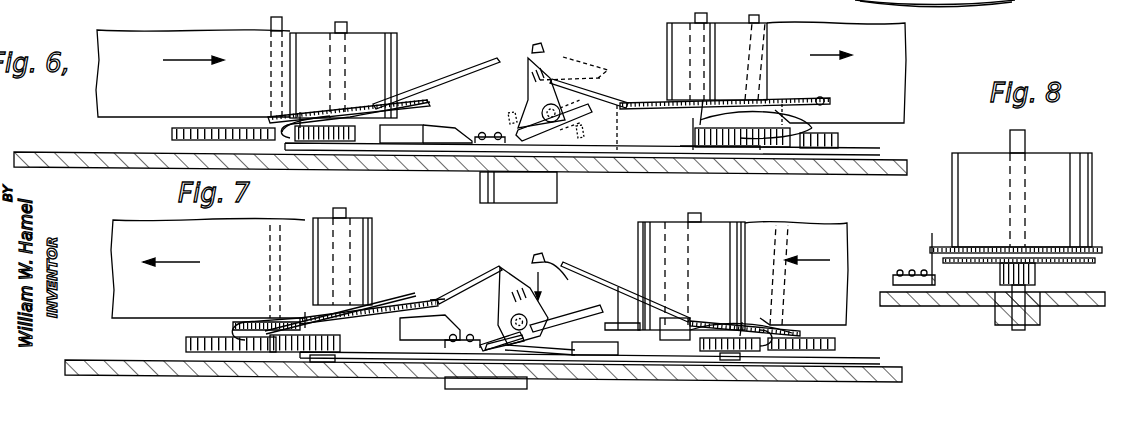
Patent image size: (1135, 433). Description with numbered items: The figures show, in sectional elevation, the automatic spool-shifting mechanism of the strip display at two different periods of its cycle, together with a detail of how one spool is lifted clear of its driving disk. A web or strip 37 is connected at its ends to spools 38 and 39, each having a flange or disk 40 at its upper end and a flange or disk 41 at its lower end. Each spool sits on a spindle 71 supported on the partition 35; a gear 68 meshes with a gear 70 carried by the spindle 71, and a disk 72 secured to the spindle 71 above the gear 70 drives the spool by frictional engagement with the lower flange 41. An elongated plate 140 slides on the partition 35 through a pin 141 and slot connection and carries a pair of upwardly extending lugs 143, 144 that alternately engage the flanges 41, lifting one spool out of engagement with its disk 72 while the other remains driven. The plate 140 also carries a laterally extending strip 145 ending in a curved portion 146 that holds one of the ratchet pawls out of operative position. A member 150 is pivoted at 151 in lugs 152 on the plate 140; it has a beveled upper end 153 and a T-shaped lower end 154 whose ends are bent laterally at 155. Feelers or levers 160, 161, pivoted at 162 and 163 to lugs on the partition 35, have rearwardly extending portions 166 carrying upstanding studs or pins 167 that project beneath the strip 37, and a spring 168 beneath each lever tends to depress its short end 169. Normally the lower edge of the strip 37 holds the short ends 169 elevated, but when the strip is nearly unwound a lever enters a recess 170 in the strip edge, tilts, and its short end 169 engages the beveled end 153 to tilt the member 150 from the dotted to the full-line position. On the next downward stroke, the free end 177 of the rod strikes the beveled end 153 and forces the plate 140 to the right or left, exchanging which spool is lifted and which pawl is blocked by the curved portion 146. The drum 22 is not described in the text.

In FIG. 6, the conveyor drum 22 is at (935, 10).
In FIG. 6, the partition 35 is at (75, 152).
In FIG. 7, the partition 35 is at (115, 346).
In FIG. 6, the web or strip 37 is at (204, 30).
In FIG. 7, the web or strip 37 is at (133, 218).
In FIG. 6, the spool 38 is at (668, 24).
In FIG. 7, the spool 38 is at (740, 223).
In FIG. 8, the spool 38 is at (952, 184).
In FIG. 6, the spool 39 is at (396, 33).
In FIG. 8, the flange or disk 40 is at (1100, 251).
In FIG. 6, the flange or disk 41 is at (431, 104).
In FIG. 7, the flange or disk 41 is at (313, 312).
In FIG. 8, the flange or disk 41 is at (930, 247).
In FIG. 6, the gear 68 is at (172, 134).
In FIG. 7, the gear 68 is at (186, 343).
In FIG. 6, the gear 70 is at (340, 141).
In FIG. 7, the gear 70 is at (355, 352).
In FIG. 8, the gear 70 is at (1000, 279).
In FIG. 6, the spindle 71 is at (348, 23).
In FIG. 7, the spindle 71 is at (348, 201).
In FIG. 8, the spindle 71 is at (1027, 141).
In FIG. 6, the disk 72 is at (302, 112).
In FIG. 7, the disk 72 is at (305, 320).
In FIG. 8, the disk 72 is at (1096, 262).
In FIG. 6, the elongated plate 140 is at (412, 148).
In FIG. 7, the elongated plate 140 is at (612, 356).
In FIG. 8, the elongated plate 140 is at (918, 286).
In FIG. 6, the pin 141 is at (582, 149).
In FIG. 7, the pin 141 is at (320, 358).
In FIG. 6, the lug 143 is at (693, 150).
In FIG. 7, the lug 143 is at (620, 298).
In FIG. 8, the lug 143 is at (925, 262).
In FIG. 6, the lug 144 is at (442, 128).
In FIG. 7, the lug 144 is at (420, 312).
In FIG. 6, the strip 145 is at (500, 135).
In FIG. 7, the strip 145 is at (462, 340).
In FIG. 6, the curved portion 146 is at (538, 203).
In FIG. 7, the curved portion 146 is at (538, 204).
In FIG. 7, the member 150 is at (555, 266).
In FIG. 7, the pivot 151 is at (556, 314).
In FIG. 7, the lugs 152 is at (558, 337).
In FIG. 6, the beveled upper end 153 is at (542, 66).
In FIG. 7, the beveled upper end 153 is at (505, 270).
In FIG. 6, the T-shaped lower end 154 is at (596, 132).
In FIG. 7, the T-shaped lower end 154 is at (520, 347).
In FIG. 6, the bent ends 155 is at (600, 100).
In FIG. 7, the bent ends 155 is at (505, 340).
In FIG. 7, the feeler or lever 160 is at (665, 316).
In FIG. 7, the feeler or lever 161 is at (385, 302).
In FIG. 7, the pivot 162 is at (663, 276).
In FIG. 7, the pivot 163 is at (440, 300).
In FIG. 6, the rearwardly extending portion 166 is at (782, 98).
In FIG. 7, the rearwardly extending portion 166 is at (233, 326).
In FIG. 6, the stud or pin 167 is at (273, 20).
In FIG. 7, the stud or pin 167 is at (270, 242).
In FIG. 6, the spring 168 is at (355, 113).
In FIG. 7, the spring 168 is at (300, 320).
In FIG. 6, the short end 169 is at (480, 0).
In FIG. 7, the short end 169 is at (499, 264).
In FIG. 6, the recess or cut-away portion 170 is at (826, 101).
In FIG. 6, the free end 177 is at (546, 46).
In FIG. 7, the free end 177 is at (548, 250).